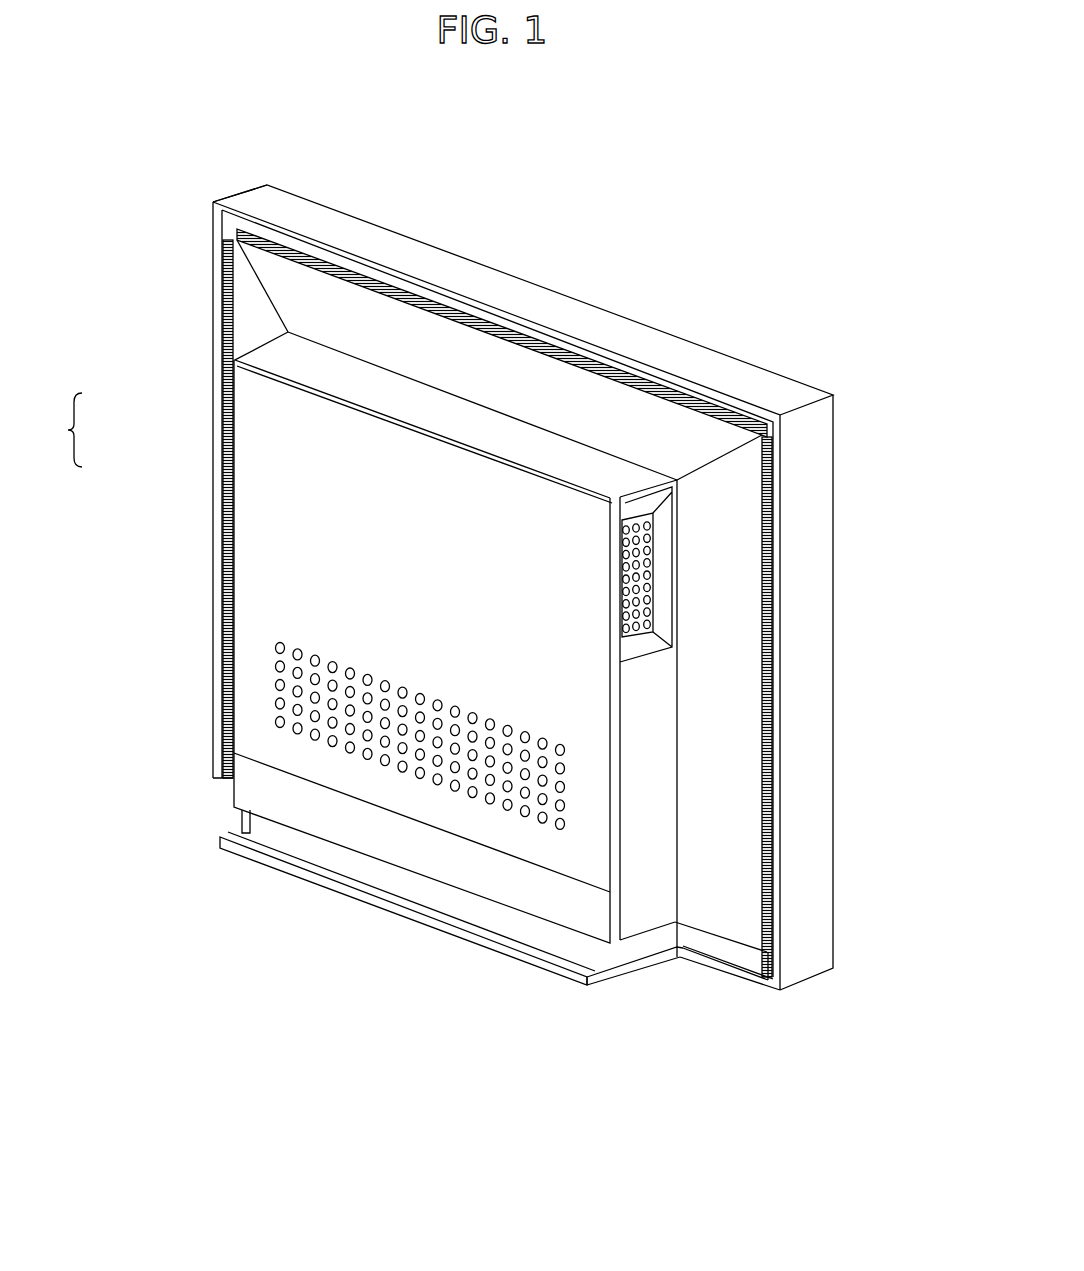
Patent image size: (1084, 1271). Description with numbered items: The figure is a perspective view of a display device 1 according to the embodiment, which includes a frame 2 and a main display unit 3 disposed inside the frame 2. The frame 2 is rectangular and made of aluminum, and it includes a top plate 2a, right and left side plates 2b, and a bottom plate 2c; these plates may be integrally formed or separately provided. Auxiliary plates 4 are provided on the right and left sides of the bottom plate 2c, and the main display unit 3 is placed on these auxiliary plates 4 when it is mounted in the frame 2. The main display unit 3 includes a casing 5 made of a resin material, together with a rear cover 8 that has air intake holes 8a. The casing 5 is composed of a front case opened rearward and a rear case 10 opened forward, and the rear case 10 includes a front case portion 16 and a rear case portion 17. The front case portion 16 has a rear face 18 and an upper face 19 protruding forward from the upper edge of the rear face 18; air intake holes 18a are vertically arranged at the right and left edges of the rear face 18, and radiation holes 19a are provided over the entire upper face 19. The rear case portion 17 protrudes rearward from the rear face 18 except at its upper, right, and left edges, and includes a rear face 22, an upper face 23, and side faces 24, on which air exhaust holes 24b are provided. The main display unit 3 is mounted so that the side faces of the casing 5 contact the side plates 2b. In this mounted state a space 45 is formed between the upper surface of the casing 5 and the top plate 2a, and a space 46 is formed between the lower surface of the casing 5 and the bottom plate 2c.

The display device 1 is at (772, 163).
The frame 2 is at (700, 362).
The top plate 2a is at (733, 410).
The side plates 2b is at (214, 235).
The bottom plate 2c is at (575, 953).
The main display unit 3 is at (703, 913).
The auxiliary plates 4 is at (240, 820).
The casing 5 is at (735, 937).
The rear cover 8 is at (250, 587).
The air intake holes 8a is at (298, 668).
The rear case 10 is at (58, 430).
The front case portion 16 is at (330, 338).
The rear case portion 17 is at (353, 385).
The rear face 18 is at (723, 500).
The air intake holes 18a is at (224, 313).
The upper face 19 is at (750, 430).
The radiation holes 19a is at (290, 237).
The rear face 22 is at (298, 816).
The upper face 23 is at (640, 340).
The side faces 24 is at (655, 813).
The air exhaust holes 24b is at (650, 538).
The space 45 is at (238, 230).
The space 46 is at (280, 827).